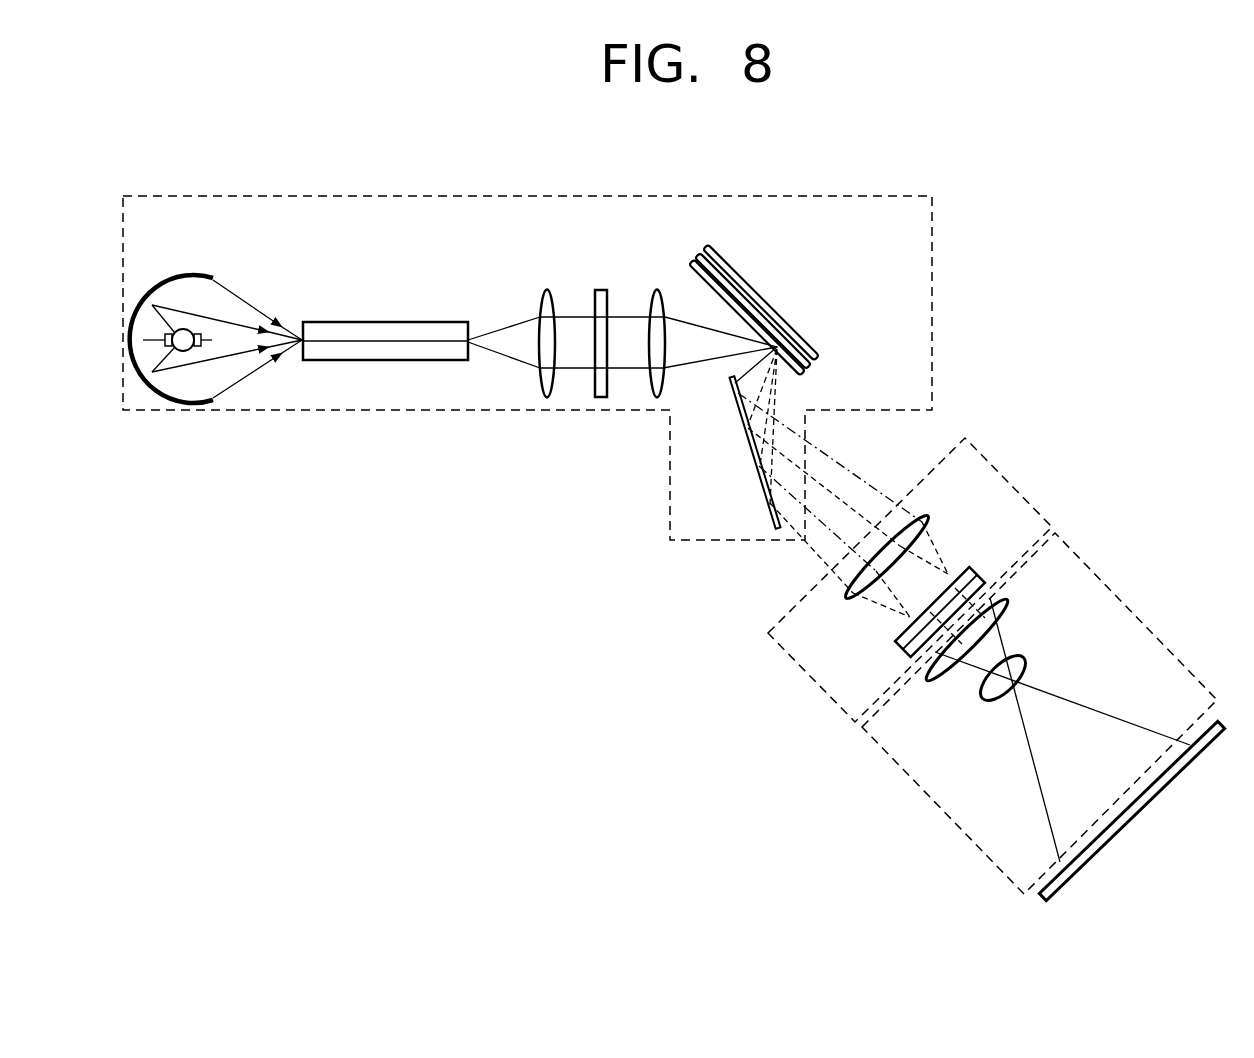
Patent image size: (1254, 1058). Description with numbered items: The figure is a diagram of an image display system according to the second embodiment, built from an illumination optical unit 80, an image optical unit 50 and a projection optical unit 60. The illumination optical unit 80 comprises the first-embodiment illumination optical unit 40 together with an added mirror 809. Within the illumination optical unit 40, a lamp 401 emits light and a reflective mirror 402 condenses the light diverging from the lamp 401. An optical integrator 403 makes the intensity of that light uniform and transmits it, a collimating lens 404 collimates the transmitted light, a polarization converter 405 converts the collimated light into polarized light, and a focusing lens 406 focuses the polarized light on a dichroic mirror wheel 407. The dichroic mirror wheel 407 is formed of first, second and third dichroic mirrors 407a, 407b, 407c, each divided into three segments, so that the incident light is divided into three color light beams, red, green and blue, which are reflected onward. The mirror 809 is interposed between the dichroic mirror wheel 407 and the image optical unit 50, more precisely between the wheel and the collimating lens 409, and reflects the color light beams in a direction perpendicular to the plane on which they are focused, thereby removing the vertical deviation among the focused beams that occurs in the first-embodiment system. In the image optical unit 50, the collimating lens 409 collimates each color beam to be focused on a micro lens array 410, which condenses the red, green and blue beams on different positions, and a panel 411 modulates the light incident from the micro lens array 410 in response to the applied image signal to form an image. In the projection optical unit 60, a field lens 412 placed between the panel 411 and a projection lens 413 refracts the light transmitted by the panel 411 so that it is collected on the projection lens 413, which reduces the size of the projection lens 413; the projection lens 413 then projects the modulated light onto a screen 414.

The illumination optical unit 40 is at (324, 236).
The illumination optical unit 80 is at (455, 195).
The lamp 401 is at (181, 328).
The reflective mirror 402 is at (192, 280).
The optical integrator 403 is at (388, 322).
The collimating lens 404 is at (547, 290).
The polarization converter 405 is at (601, 290).
The focusing lens 406 is at (657, 290).
The dichroic mirror wheel 407 is at (844, 343).
The first dichroic mirror 407a is at (717, 259).
The second dichroic mirror 407b is at (758, 301).
The third dichroic mirror 407c is at (788, 329).
The mirror 809 is at (758, 473).
The image optical unit 50 is at (812, 680).
The collimating lens 409 is at (925, 520).
The micro lens array 410 is at (970, 567).
The panel 411 is at (978, 578).
The projection optical unit 60 is at (952, 827).
The field lens 412 is at (1000, 603).
The projection lens 413 is at (1022, 658).
The screen 414 is at (1148, 795).